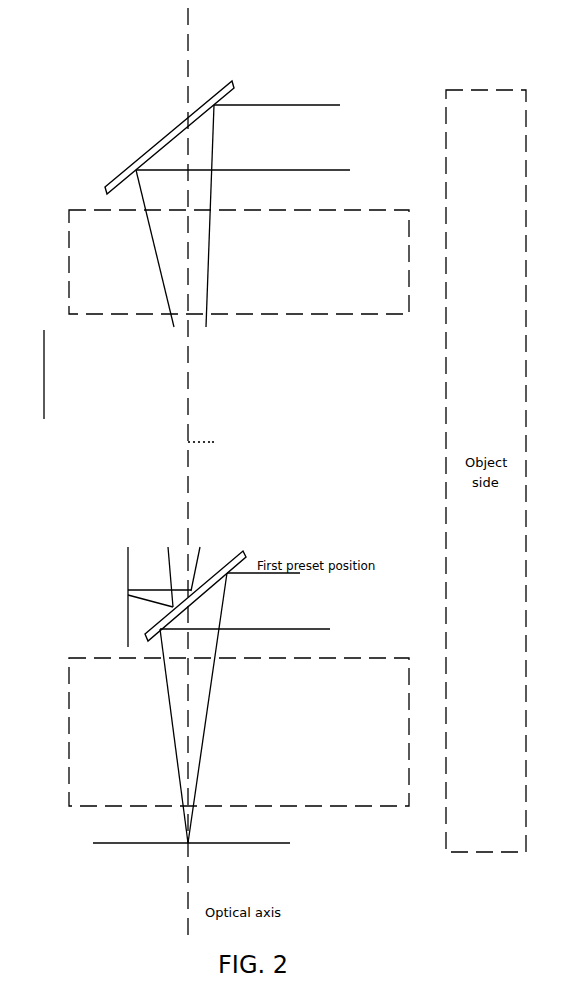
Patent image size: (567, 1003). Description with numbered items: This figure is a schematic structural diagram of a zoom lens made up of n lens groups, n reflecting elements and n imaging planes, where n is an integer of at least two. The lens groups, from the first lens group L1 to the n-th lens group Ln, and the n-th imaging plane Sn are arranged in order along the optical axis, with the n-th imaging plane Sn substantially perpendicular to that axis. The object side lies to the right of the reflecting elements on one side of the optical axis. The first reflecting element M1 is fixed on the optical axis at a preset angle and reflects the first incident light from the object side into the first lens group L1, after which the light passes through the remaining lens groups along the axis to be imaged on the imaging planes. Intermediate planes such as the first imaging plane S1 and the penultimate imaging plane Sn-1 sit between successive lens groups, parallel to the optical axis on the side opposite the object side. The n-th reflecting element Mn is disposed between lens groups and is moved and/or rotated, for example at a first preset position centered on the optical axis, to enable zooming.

The first reflecting element M1 is at (169, 137).
The first lens group L1 is at (239, 262).
The first imaging plane S1 is at (30, 374).
The (n-1)-th imaging plane Sn-1 is at (143, 597).
The n-th reflecting element Mn is at (195, 596).
The n-th lens group Ln is at (239, 732).
The n-th imaging plane Sn is at (191, 830).